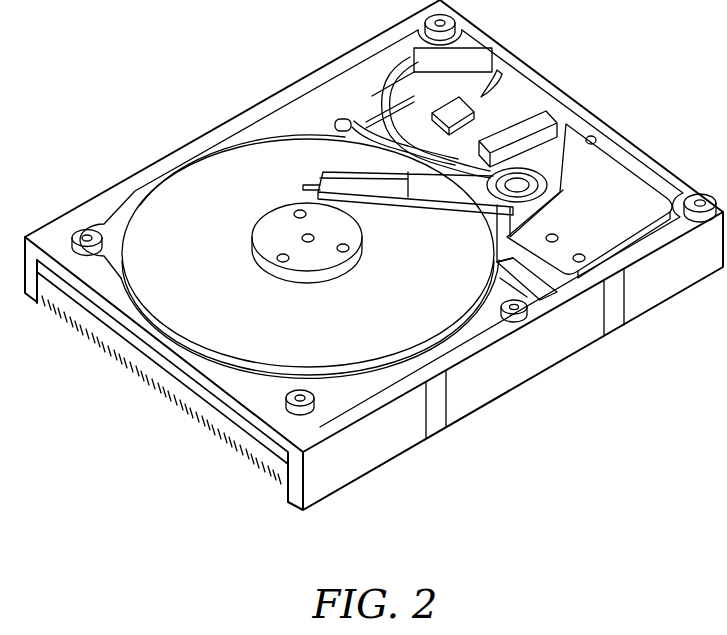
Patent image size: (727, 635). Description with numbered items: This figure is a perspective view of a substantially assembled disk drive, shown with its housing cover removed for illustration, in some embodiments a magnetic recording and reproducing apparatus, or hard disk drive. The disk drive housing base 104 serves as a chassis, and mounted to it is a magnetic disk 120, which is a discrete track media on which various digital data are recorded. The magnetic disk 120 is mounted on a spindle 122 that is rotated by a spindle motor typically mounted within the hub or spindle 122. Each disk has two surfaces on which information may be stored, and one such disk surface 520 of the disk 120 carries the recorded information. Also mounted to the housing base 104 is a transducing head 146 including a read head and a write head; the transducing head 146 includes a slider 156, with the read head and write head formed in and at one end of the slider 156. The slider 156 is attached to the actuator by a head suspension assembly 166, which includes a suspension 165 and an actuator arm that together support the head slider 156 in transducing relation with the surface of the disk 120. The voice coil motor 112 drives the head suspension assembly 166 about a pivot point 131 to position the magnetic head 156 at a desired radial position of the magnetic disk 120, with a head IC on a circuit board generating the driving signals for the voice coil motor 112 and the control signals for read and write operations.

The housing base 104 is at (58, 227).
The voice coil motor 112 is at (627, 163).
The magnetic disk 120 is at (187, 180).
The spindle 122 is at (273, 228).
The pivot point 131 is at (519, 185).
The transducing head 146 is at (348, 203).
The slider 156 is at (417, 210).
The suspension 165 is at (333, 210).
The head suspension assembly 166 is at (392, 151).
The disk surface 520 is at (273, 481).